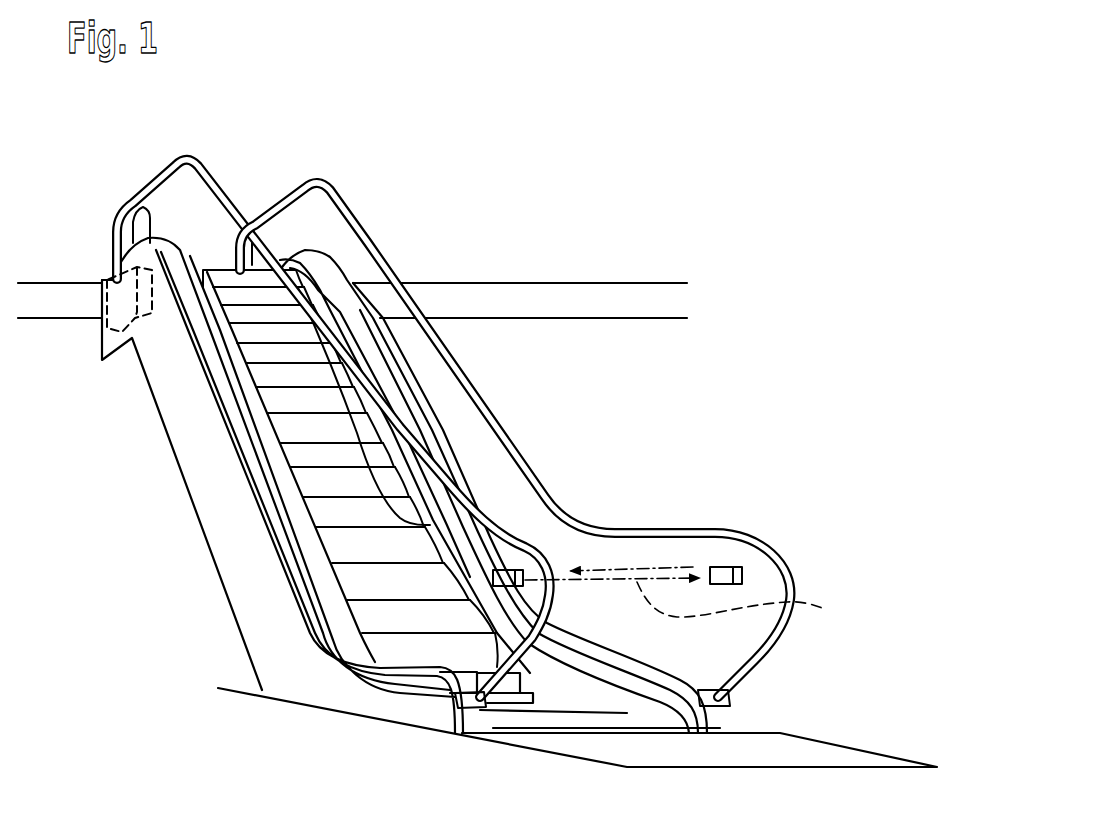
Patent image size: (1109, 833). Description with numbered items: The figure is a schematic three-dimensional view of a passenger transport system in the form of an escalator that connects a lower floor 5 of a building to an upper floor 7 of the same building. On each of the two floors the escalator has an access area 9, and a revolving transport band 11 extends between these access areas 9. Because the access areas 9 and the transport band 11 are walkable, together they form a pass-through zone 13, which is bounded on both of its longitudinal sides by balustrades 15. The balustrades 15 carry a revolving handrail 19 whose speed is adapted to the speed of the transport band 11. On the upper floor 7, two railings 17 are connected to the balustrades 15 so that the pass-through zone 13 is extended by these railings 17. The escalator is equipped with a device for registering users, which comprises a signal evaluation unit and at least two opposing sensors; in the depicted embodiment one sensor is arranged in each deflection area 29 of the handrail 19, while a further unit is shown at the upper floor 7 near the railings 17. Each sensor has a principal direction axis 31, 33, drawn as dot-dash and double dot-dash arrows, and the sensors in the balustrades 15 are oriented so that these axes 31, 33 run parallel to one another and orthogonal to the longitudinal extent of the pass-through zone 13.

The lower floor 5 is at (300, 732).
The upper floor 7 is at (43, 292).
The access area 9 is at (207, 238).
The transport band 11 is at (330, 377).
The pass-through zone 13 is at (302, 305).
The balustrade 15 is at (447, 398).
The railing 17 is at (115, 240).
The handrail 19 is at (503, 440).
The deflection area 29 is at (790, 540).
The principal direction axis 31 is at (630, 560).
The principal direction axis 33 is at (807, 607).